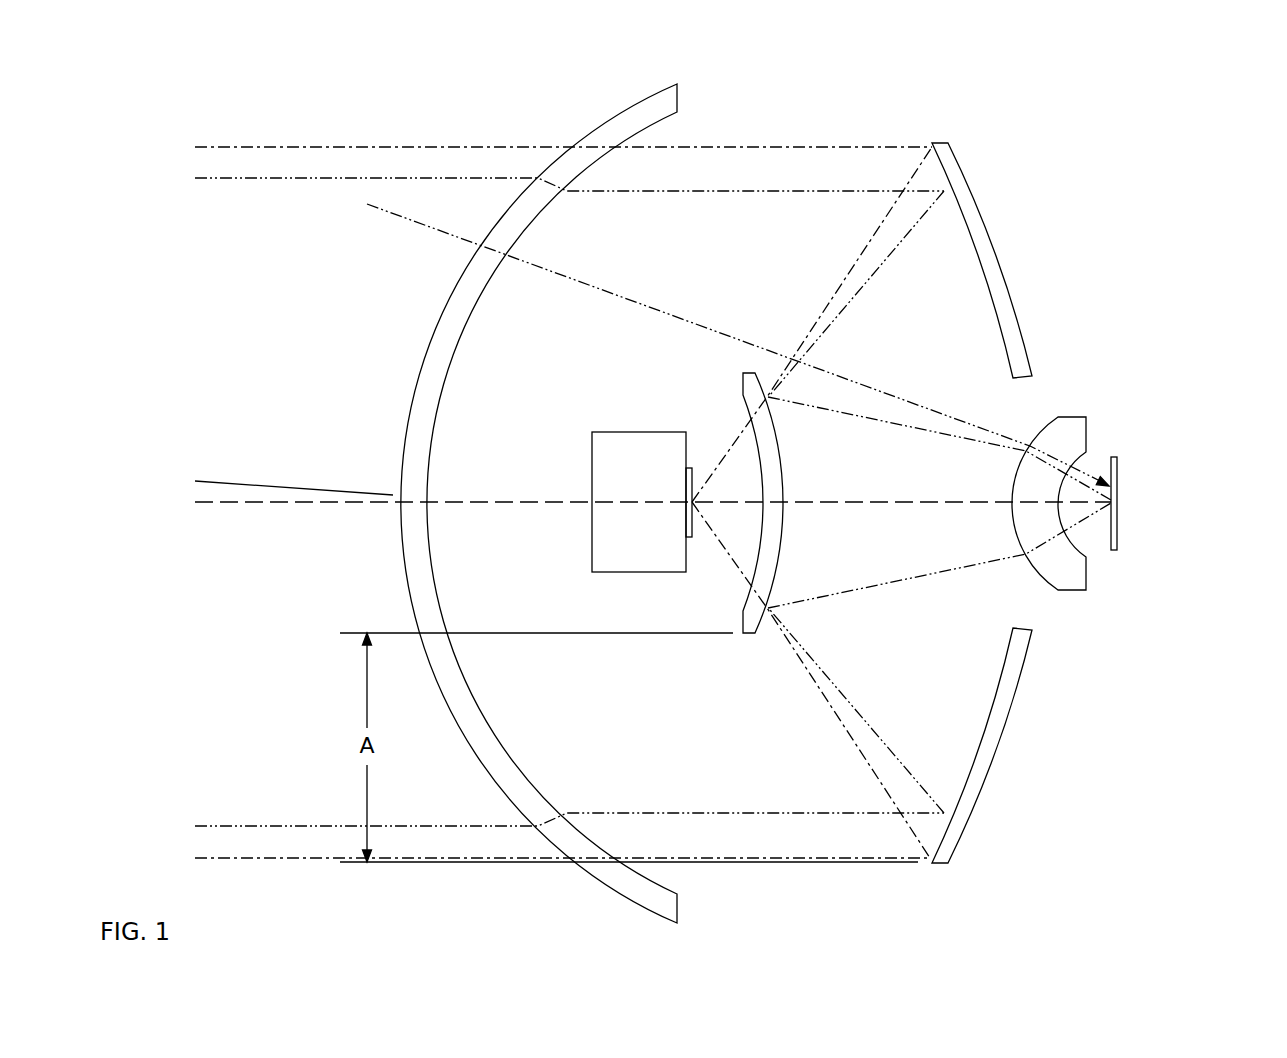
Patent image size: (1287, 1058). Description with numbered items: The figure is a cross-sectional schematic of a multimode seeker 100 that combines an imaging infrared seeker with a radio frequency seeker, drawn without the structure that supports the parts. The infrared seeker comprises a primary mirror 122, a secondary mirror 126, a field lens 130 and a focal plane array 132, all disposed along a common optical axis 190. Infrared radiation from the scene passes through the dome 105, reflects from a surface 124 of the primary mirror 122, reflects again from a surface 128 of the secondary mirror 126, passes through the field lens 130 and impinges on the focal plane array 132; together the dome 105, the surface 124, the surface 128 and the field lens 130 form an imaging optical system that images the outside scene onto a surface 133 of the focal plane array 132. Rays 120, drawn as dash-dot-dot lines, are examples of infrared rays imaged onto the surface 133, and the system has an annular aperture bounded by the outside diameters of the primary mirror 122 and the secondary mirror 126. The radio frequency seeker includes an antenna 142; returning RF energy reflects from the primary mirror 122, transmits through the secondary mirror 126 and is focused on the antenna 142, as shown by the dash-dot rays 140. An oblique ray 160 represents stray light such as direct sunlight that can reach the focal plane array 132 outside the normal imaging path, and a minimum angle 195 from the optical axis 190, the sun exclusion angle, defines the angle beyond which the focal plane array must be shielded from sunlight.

The multimode seeker 100 is at (1093, 118).
The dome 105 is at (613, 113).
The rays 120 is at (258, 826).
The primary mirror 122 is at (973, 198).
The surface 124 is at (988, 324).
The secondary mirror 126 is at (743, 392).
The surface 128 is at (795, 465).
The field lens 130 is at (1077, 417).
The focal plane array 132 is at (1120, 488).
The surface 133 is at (1097, 530).
The rays 140 is at (278, 858).
The antenna 142 is at (695, 538).
The oblique ray 160 is at (423, 225).
The optical axis 190 is at (240, 503).
The minimum angle 195 is at (277, 509).